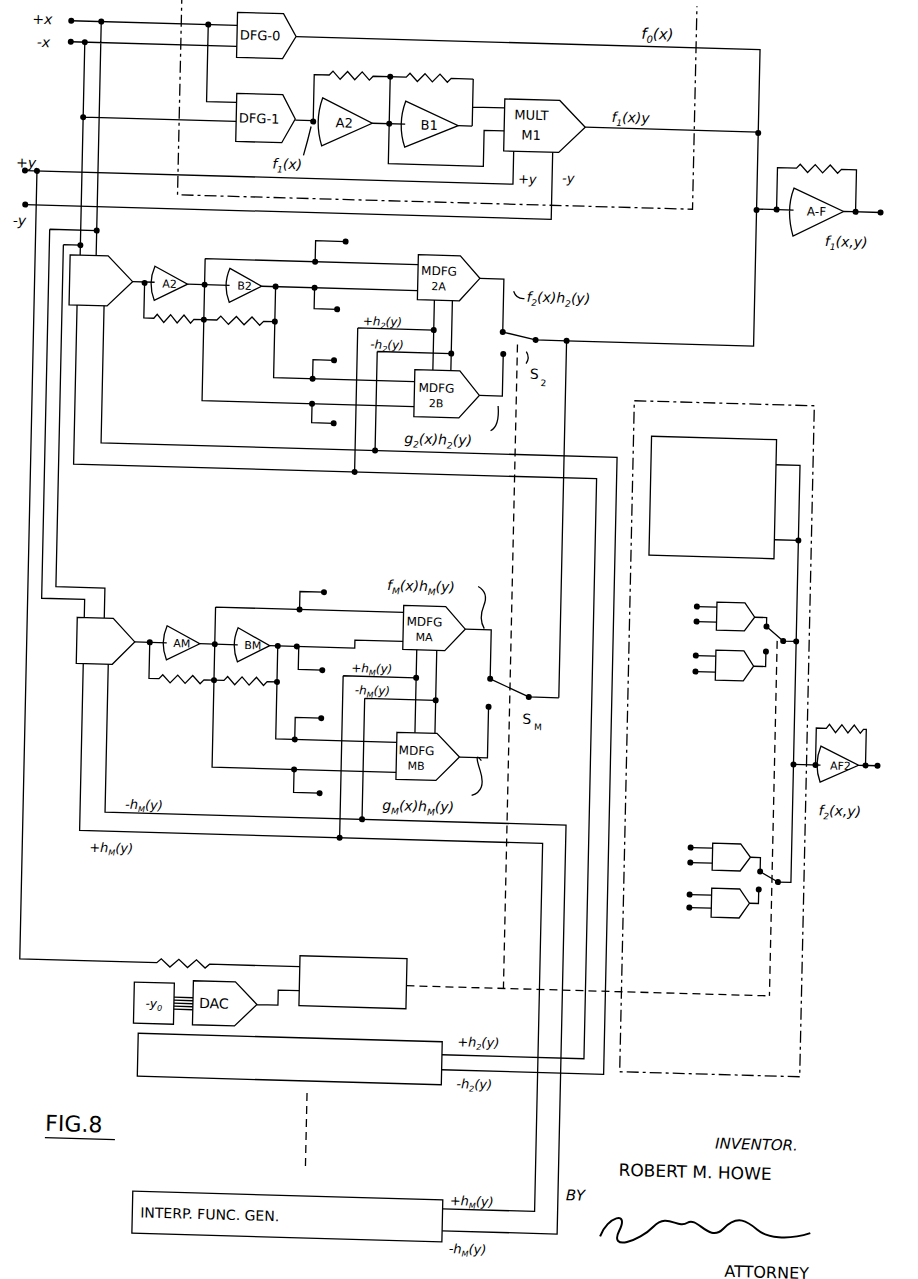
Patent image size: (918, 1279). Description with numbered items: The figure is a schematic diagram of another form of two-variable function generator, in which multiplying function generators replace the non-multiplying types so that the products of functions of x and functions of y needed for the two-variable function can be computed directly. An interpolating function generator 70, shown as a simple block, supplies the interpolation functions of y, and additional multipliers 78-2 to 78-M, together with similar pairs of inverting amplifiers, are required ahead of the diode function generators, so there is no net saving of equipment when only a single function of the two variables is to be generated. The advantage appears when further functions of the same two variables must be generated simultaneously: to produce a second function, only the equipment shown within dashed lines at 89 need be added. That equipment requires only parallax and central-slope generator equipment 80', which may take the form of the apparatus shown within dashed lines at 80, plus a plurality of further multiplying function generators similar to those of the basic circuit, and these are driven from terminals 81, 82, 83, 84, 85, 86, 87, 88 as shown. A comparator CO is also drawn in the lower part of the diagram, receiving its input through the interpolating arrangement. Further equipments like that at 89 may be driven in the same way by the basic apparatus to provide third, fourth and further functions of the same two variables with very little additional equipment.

The interpolating function generator 70 is at (293, 1042).
The multiplier 78-2 is at (116, 278).
The multiplier 78-M is at (126, 630).
The parallax and central-slope generator apparatus 80 is at (451, 105).
The parallax and central-slope generator equipment 80' is at (713, 489).
The terminal 81 is at (339, 246).
The terminal 82 is at (332, 313).
The terminal 83 is at (329, 362).
The terminal 84 is at (328, 429).
The terminal 85 is at (325, 594).
The terminal 86 is at (321, 676).
The terminal 87 is at (323, 720).
The terminal 88 is at (320, 800).
The second-function equipment 89 is at (667, 396).
The comparator CO is at (357, 960).